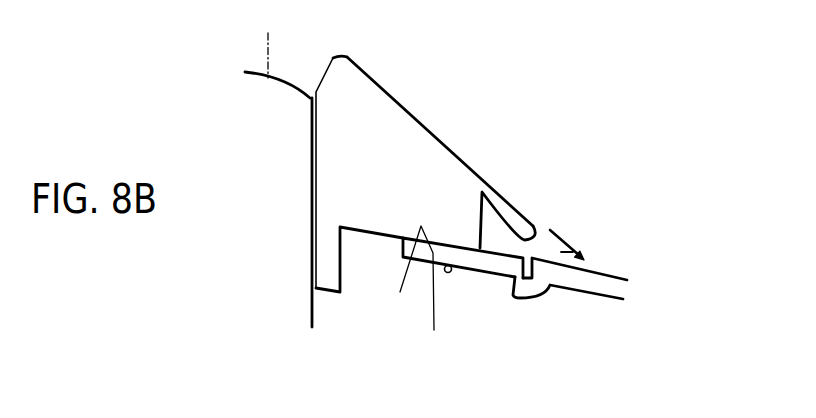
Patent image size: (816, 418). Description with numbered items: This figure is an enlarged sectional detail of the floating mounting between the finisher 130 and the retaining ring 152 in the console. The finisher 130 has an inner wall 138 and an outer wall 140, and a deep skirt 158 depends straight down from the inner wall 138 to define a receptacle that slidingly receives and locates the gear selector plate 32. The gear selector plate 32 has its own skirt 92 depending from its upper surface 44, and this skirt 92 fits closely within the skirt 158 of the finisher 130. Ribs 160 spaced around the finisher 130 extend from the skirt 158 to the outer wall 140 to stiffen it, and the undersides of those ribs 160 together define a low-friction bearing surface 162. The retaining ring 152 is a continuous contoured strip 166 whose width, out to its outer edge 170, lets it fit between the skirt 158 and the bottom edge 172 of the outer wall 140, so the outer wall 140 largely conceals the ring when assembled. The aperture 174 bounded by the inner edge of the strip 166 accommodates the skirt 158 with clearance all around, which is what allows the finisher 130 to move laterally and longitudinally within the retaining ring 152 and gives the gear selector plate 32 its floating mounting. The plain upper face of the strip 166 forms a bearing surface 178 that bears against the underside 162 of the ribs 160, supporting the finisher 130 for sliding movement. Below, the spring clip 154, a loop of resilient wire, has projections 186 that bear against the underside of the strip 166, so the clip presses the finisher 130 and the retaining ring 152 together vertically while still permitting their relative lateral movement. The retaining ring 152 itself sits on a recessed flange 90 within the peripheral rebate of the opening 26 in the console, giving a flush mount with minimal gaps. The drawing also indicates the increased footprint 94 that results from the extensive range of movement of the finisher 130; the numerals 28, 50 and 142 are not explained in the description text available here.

The opening 26 is at (373, 240).
The rail 28 is at (601, 284).
The gear selector plate 32 is at (262, 100).
The upper surface 44 is at (268, 46).
The rail member 50 is at (617, 273).
The recessed flange 90 is at (527, 288).
The skirt 92 is at (308, 298).
The footprint 94 is at (568, 246).
The finisher 130 is at (362, 103).
The inner wall 138 is at (333, 110).
The outer wall 140 is at (408, 122).
The upper edge 142 is at (343, 73).
The retaining ring 152 is at (527, 257).
The spring clip 154 is at (449, 276).
The skirt 158 is at (325, 278).
The ribs 160 is at (380, 208).
The bearing surface 162 is at (445, 245).
The contoured strip 166 is at (476, 246).
The outer edge 170 is at (563, 237).
The bottom edge 172 is at (551, 230).
The aperture 174 is at (358, 240).
The bearing surface 178 is at (417, 287).
The projections 186 is at (453, 273).